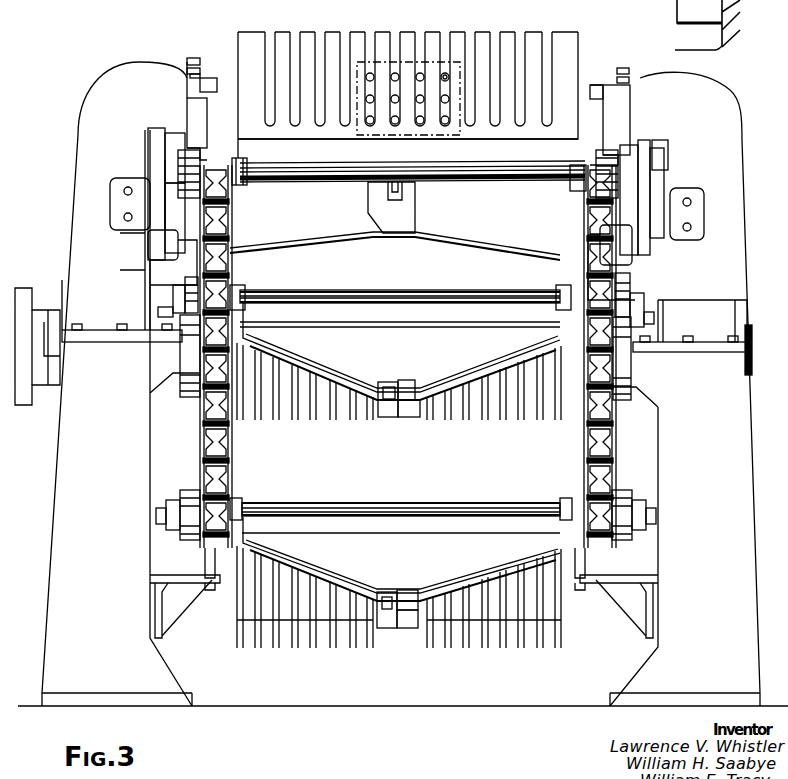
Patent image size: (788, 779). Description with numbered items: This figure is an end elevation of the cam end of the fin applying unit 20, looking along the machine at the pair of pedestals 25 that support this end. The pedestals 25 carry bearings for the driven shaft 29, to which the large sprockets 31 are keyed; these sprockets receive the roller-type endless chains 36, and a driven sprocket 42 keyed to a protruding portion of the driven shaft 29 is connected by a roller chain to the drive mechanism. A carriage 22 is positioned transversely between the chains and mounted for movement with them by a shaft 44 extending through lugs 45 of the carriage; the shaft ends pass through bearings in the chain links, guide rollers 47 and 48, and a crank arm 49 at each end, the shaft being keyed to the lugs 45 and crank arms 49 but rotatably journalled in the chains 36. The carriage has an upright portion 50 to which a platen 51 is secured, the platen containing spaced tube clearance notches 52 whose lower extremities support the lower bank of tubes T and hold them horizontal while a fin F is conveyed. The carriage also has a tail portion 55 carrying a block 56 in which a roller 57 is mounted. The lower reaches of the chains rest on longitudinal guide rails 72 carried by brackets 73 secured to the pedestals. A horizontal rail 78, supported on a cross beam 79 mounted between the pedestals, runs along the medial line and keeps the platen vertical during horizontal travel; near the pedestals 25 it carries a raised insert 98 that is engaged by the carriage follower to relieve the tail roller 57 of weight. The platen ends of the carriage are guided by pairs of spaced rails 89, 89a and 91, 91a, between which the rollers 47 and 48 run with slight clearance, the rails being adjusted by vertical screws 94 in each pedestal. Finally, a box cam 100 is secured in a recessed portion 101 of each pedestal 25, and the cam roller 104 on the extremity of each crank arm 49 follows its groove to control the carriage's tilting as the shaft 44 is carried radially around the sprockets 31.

The fin applying unit 20 is at (290, 676).
The carriage 22 is at (308, 32).
The pedestal 25 is at (401, 384).
The driven shaft 29 is at (50, 320).
The large sprocket 31 is at (600, 476).
The endless chain 36 is at (622, 450).
The driven sprocket 42 is at (22, 405).
The shaft 44 is at (318, 182).
The lug 45 is at (575, 191).
The guide roller 47 is at (200, 156).
The guide roller 48 is at (600, 153).
The crank arm 49 is at (150, 143).
The upright portion 50 is at (408, 148).
The platen 51 is at (378, 50).
The tube clearance notch 52 is at (345, 32).
The tail portion 55 is at (372, 393).
The block 56 is at (405, 417).
The roller 57 is at (408, 380).
The guide rail 72 is at (205, 560).
The bracket 73 is at (178, 620).
The horizontal rail 78 is at (415, 202).
The cross beam 79 is at (400, 316).
The rail 89 is at (207, 120).
The rail 89a is at (185, 233).
The rail 91 is at (603, 120).
The rail 91a is at (628, 235).
The vertical screw 94 is at (190, 58).
The raised insert 98 is at (385, 197).
The box cam 100 is at (660, 185).
The recessed portion 101 is at (665, 165).
The cam roller 104 is at (660, 145).
The fin F is at (435, 50).
The tube T is at (447, 74).